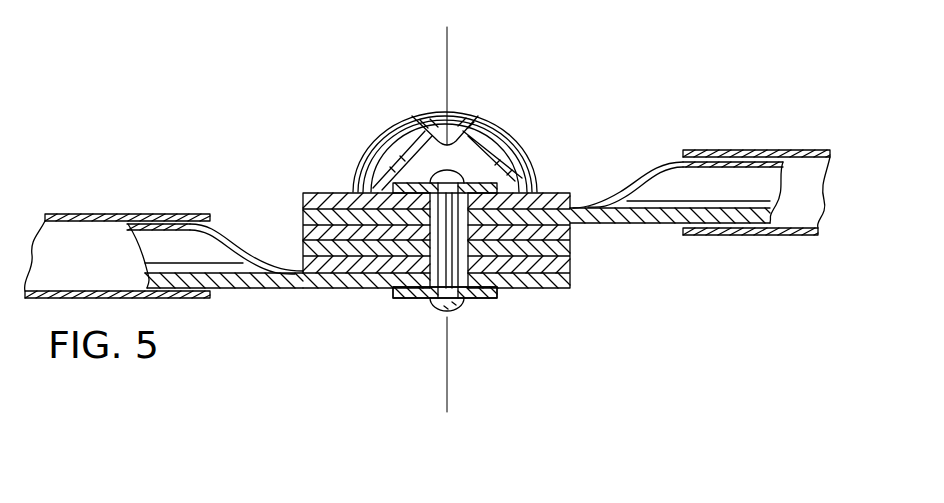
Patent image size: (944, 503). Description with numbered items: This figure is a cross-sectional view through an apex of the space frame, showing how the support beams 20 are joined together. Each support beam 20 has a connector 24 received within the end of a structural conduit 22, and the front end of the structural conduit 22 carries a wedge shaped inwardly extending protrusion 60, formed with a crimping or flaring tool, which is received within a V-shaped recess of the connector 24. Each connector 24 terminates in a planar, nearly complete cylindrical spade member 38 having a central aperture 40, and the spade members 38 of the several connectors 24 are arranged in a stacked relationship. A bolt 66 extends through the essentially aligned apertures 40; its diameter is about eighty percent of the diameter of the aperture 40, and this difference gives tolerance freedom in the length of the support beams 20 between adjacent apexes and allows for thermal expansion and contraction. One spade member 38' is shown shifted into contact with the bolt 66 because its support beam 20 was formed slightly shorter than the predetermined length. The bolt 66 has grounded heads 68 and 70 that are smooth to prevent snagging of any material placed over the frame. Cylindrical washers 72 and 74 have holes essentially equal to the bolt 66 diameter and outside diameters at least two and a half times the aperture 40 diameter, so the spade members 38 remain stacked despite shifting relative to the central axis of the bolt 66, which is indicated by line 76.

The support beam 20 is at (808, 148).
The structural conduit 22 is at (88, 213).
The connector 24 is at (247, 290).
The spade member 38 is at (432, 239).
The shifted spade member 38' is at (328, 222).
The central aperture 40 is at (393, 291).
The wedge shaped inwardly extending protrusion 60 is at (466, 112).
The bolt 66 is at (457, 299).
The grounded head 68 is at (433, 312).
The grounded head 70 is at (440, 150).
The cylindrical washer 72 is at (483, 300).
The cylindrical washer 74 is at (477, 180).
The axis 76 is at (448, 400).